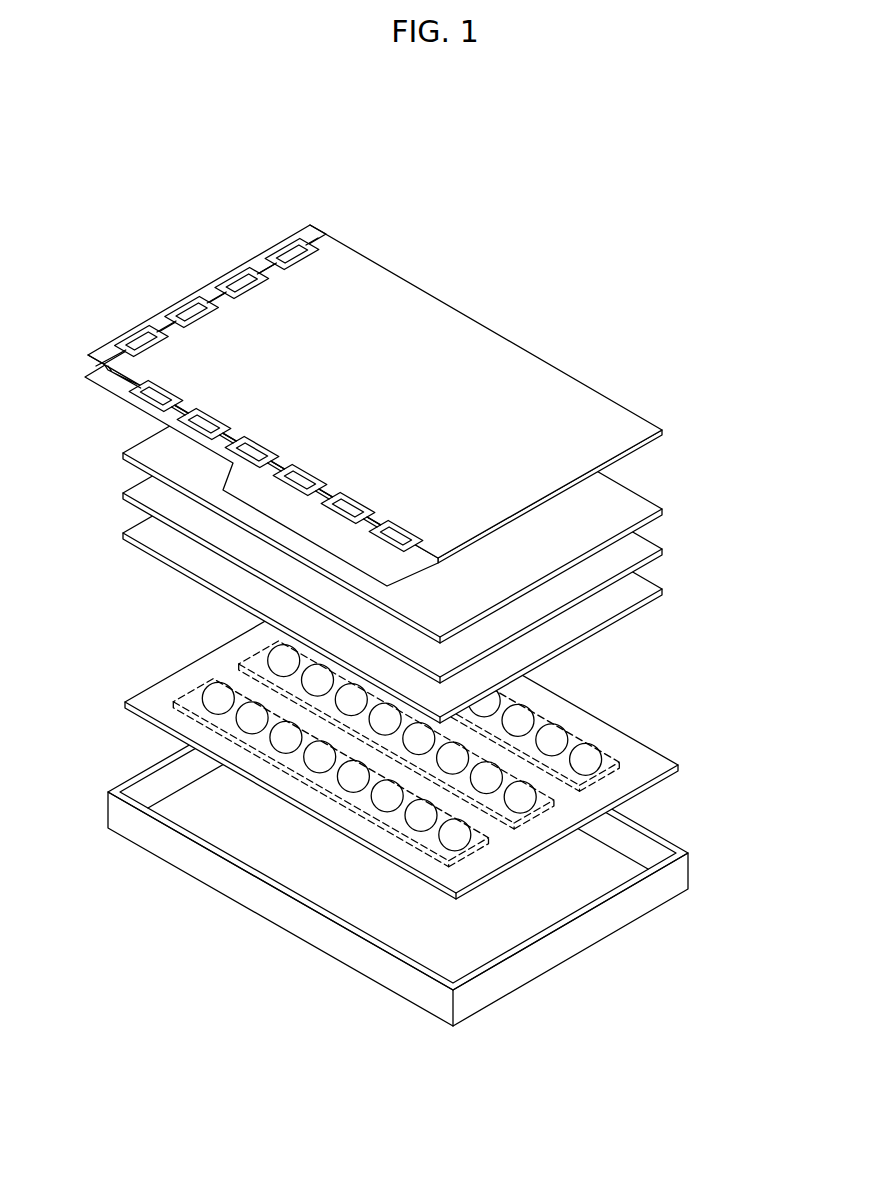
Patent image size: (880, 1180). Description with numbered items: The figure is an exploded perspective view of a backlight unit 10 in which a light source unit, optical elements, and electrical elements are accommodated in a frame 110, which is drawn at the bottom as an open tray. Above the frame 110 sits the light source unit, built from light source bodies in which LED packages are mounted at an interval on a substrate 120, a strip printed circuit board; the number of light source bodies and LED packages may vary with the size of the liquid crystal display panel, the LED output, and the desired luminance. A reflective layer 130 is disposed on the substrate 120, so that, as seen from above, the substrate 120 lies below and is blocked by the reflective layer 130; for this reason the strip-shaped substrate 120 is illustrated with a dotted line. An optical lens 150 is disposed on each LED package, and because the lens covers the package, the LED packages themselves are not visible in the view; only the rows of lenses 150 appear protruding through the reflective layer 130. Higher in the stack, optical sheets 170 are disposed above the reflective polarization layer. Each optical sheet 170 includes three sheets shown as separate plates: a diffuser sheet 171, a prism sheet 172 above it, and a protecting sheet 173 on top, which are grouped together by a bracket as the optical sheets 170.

The backlight unit 10 is at (464, 205).
The frame 110 is at (678, 873).
The substrate 120 is at (628, 776).
The reflective layer 130 is at (668, 763).
The optical lens 150 is at (588, 752).
The optical sheets 170 is at (455, 524).
The diffuser sheet 171 is at (643, 583).
The prism sheet 172 is at (643, 543).
The protecting sheet 173 is at (741, 603).